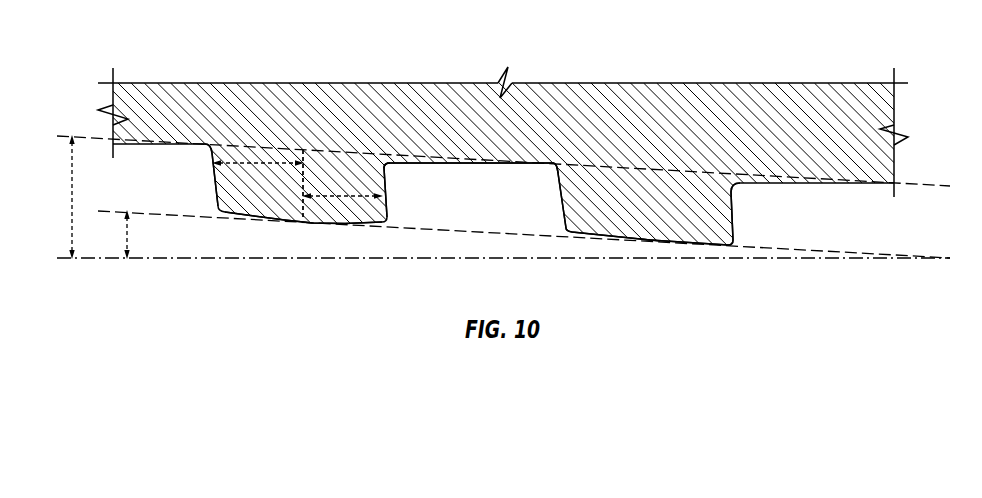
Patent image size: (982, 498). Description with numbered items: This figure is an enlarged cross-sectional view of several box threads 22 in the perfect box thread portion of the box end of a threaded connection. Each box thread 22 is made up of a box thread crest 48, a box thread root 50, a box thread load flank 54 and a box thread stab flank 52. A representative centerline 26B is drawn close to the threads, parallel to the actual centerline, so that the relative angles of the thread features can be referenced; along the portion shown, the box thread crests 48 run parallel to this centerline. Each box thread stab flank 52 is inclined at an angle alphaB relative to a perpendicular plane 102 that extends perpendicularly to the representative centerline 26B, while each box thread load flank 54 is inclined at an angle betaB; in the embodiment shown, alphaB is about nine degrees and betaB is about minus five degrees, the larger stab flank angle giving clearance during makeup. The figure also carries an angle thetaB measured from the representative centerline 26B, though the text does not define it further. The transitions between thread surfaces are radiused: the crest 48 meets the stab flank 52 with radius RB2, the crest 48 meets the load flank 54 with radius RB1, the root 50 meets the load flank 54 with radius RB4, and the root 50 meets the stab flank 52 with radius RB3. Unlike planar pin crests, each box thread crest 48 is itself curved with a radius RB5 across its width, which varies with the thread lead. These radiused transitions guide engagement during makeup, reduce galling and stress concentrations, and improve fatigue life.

The box thread 22 is at (647, 200).
The representative centerline 26B is at (178, 259).
The box thread crest 48 is at (333, 224).
The box thread root 50 is at (520, 163).
The box thread stab flank 52 is at (212, 178).
The box thread load flank 54 is at (386, 200).
The perpendicular plane 102 is at (302, 198).
The radius of curvature RB1 is at (730, 246).
The radius of curvature RB2 is at (567, 229).
The radius of curvature RB3 is at (555, 163).
The radius of curvature RB4 is at (383, 161).
The radius of curvature RB5 is at (652, 241).
The angle theta B thetaB is at (73, 200).
The angle alphaB is at (255, 165).
The angle betaB is at (343, 198).